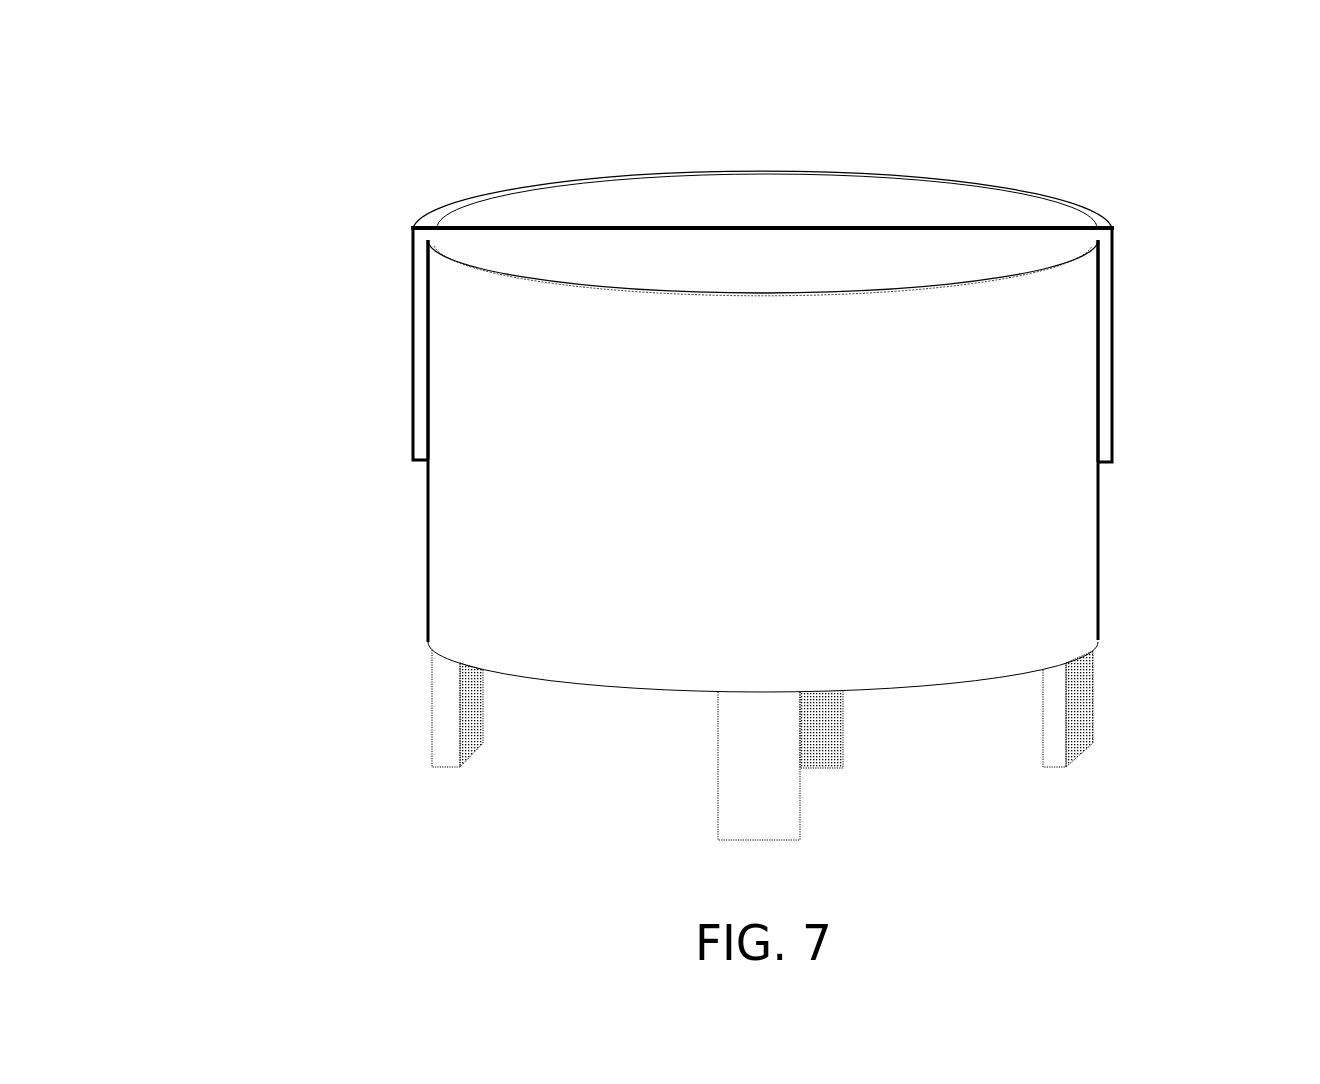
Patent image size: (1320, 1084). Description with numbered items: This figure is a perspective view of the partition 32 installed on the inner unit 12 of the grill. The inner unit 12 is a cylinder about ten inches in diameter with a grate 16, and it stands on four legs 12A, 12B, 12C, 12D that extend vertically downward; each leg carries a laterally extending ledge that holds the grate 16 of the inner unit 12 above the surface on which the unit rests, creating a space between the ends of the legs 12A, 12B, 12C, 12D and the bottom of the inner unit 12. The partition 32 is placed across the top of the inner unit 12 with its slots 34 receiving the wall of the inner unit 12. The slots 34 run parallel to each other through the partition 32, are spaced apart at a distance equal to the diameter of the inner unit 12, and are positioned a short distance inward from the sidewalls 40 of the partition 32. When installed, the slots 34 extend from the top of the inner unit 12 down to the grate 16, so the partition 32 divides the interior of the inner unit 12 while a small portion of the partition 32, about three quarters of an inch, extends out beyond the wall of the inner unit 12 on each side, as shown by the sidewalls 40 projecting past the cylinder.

The inner unit 12 is at (210, 119).
The leg 12A is at (800, 795).
The leg 12B is at (468, 705).
The leg 12C is at (1093, 683).
The leg 12D is at (827, 722).
The grate 16 is at (1037, 480).
The partition 32 is at (373, 238).
The slots 34 is at (427, 418).
The sidewalls 40 is at (413, 325).